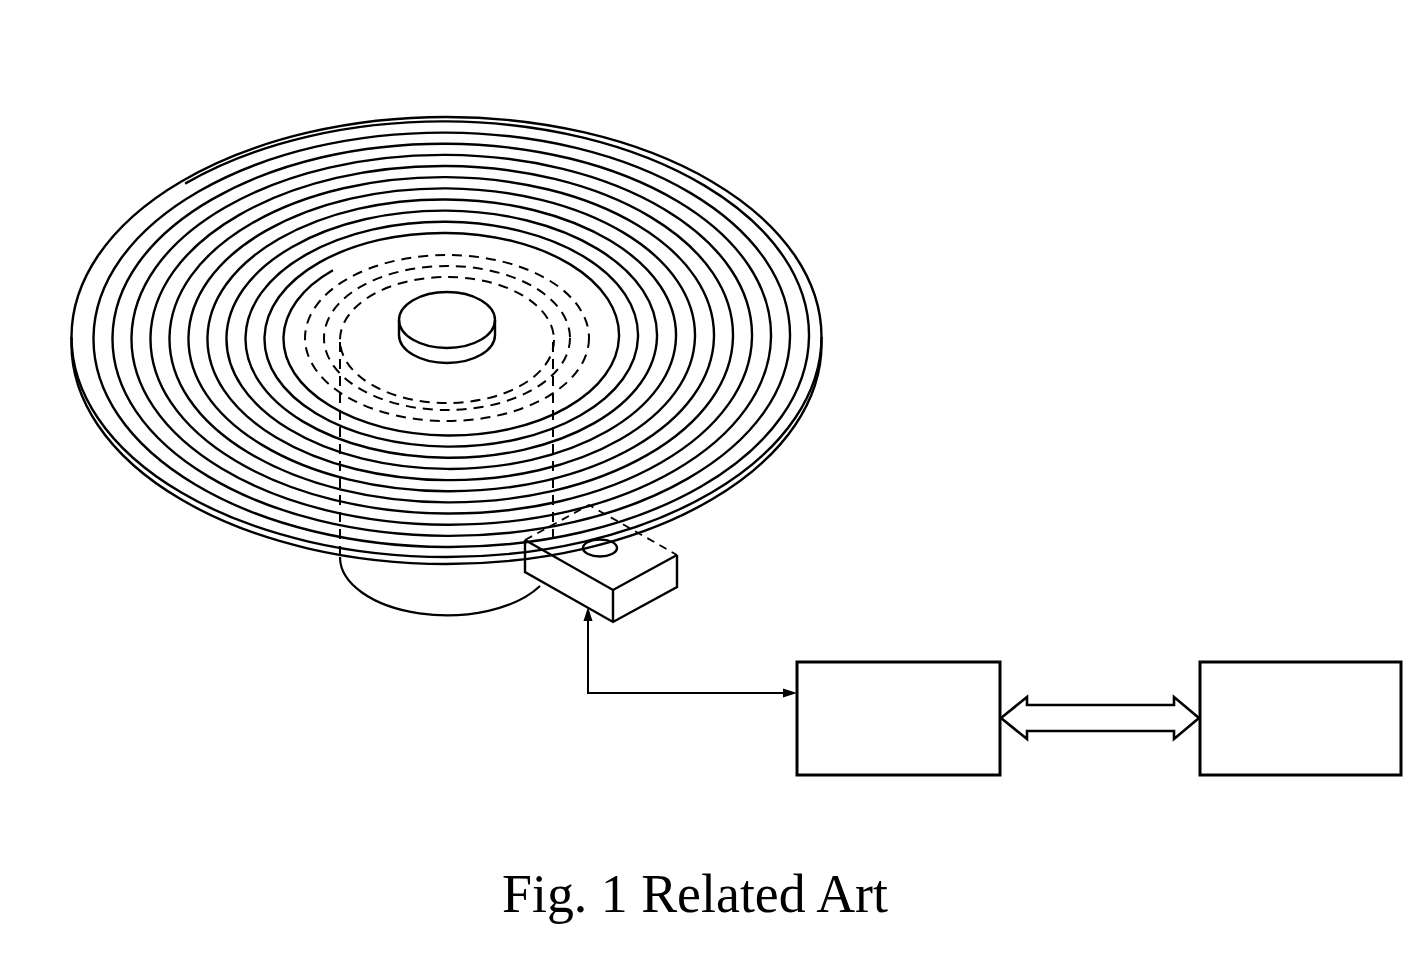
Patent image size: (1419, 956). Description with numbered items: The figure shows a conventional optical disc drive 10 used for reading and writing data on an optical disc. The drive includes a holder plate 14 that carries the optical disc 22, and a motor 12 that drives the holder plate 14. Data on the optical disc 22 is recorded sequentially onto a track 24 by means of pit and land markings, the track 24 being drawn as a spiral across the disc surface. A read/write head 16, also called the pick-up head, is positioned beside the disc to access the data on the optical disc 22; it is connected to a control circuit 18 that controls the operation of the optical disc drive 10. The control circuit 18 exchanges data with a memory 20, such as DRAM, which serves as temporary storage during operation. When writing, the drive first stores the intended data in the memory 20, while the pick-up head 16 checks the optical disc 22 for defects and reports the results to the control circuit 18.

The optical disc drive 10 is at (757, 134).
The motor 12 is at (477, 597).
The holder plate 14 is at (448, 300).
The read/write head 16 is at (652, 590).
The control circuit 18 is at (1000, 673).
The memory 20 is at (1277, 662).
The optical disc 22 is at (817, 338).
The track 24 is at (787, 257).